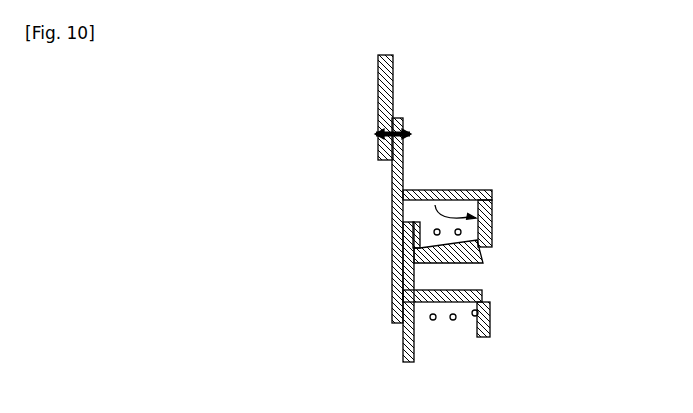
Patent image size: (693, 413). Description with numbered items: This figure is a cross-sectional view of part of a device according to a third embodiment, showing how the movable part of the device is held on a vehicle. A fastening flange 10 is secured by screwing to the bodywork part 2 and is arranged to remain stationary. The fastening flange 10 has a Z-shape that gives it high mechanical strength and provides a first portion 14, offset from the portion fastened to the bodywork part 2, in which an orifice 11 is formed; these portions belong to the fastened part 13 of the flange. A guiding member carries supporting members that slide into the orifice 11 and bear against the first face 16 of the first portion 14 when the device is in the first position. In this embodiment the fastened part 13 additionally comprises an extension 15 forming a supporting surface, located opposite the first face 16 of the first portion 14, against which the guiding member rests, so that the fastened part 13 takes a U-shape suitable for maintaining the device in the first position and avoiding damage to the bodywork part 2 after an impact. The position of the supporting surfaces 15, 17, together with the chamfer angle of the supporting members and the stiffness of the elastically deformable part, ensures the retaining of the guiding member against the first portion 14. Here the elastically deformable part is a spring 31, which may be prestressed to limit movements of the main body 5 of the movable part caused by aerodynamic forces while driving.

The bodywork part 2 is at (378, 90).
The main body 5 is at (403, 355).
The fastening flange 10 is at (428, 208).
The orifice 11 is at (485, 276).
The fastened part 13 is at (427, 192).
The first portion 14 is at (490, 317).
The extension forming a supporting surface 15 is at (380, 245).
The first face 16 is at (492, 193).
The supporting surface 17 is at (497, 328).
The spring 31 is at (461, 333).